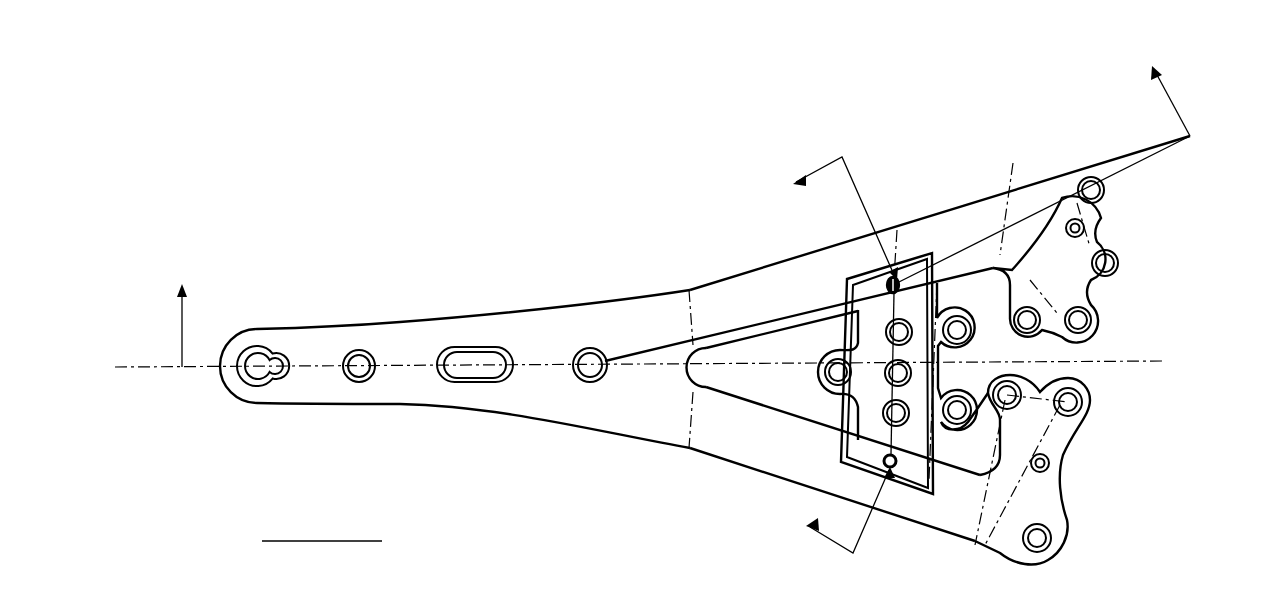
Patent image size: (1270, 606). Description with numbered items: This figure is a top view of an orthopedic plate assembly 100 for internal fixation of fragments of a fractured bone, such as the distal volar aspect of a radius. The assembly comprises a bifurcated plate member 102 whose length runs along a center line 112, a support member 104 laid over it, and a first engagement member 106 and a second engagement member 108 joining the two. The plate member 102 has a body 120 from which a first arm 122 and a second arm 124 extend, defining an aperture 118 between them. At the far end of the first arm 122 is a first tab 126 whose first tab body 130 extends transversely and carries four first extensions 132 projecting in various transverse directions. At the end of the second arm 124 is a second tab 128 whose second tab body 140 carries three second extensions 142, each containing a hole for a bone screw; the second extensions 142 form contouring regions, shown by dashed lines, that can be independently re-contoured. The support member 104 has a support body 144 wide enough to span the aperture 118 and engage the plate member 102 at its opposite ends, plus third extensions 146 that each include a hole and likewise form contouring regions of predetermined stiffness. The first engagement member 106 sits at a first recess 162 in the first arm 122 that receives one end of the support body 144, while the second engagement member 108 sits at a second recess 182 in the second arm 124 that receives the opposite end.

The orthopedic plate assembly 100 is at (515, 123).
The bifurcated plate member 102 is at (530, 317).
The support member 104 is at (857, 323).
The first engagement member 106 is at (917, 257).
The second engagement member 108 is at (895, 472).
The center line 112 is at (1165, 361).
The aperture 118 is at (759, 392).
The body 120 is at (402, 323).
The first arm 122 is at (722, 290).
The second arm 124 is at (702, 448).
The first tab 126 is at (1062, 175).
The second tab 128 is at (1047, 488).
The first tab body 130 is at (1043, 237).
The first extensions 132 is at (1110, 193).
The second tab body 140 is at (1053, 435).
The second extensions 142 is at (1097, 403).
The support body 144 is at (863, 405).
The third extensions 146 is at (820, 383).
The first recess 162 is at (939, 259).
The second recess 182 is at (939, 490).